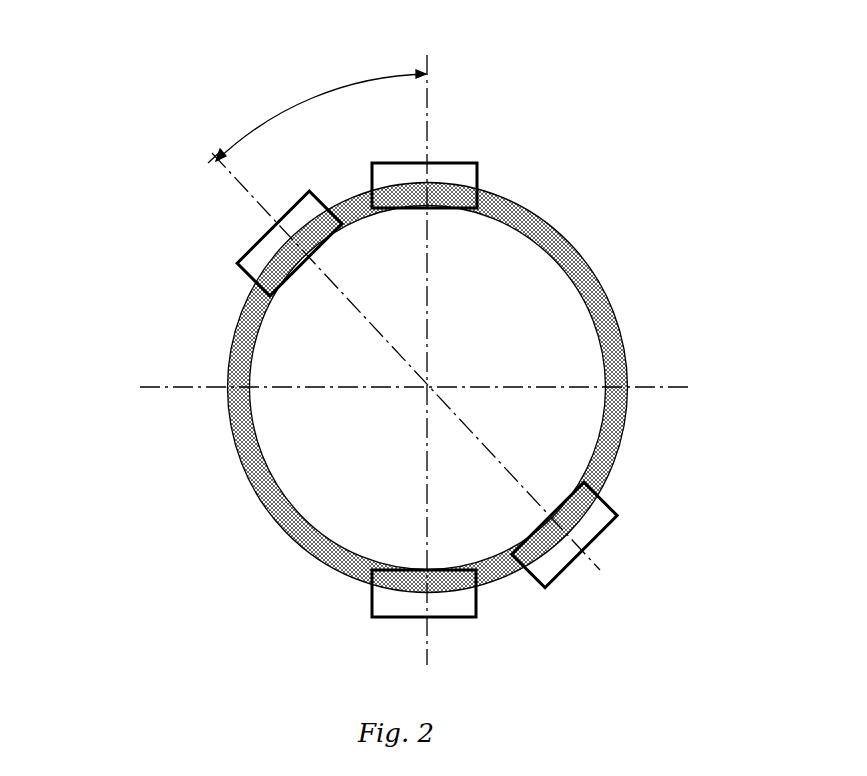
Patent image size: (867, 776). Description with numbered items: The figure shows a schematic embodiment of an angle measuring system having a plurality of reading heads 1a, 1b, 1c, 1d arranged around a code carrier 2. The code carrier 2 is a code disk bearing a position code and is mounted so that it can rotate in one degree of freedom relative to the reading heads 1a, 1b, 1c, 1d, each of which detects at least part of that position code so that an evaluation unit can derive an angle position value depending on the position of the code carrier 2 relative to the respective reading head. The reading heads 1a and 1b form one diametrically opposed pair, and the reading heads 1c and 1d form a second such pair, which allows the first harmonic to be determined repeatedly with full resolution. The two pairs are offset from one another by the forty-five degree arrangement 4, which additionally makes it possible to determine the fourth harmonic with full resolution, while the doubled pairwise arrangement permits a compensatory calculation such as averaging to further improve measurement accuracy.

The reading head 1a is at (511, 156).
The reading head 1b is at (495, 632).
The reading head 1c is at (631, 548).
The reading head 1d is at (196, 243).
The code carrier 2 is at (379, 388).
The angular arrangement 4 is at (355, 312).